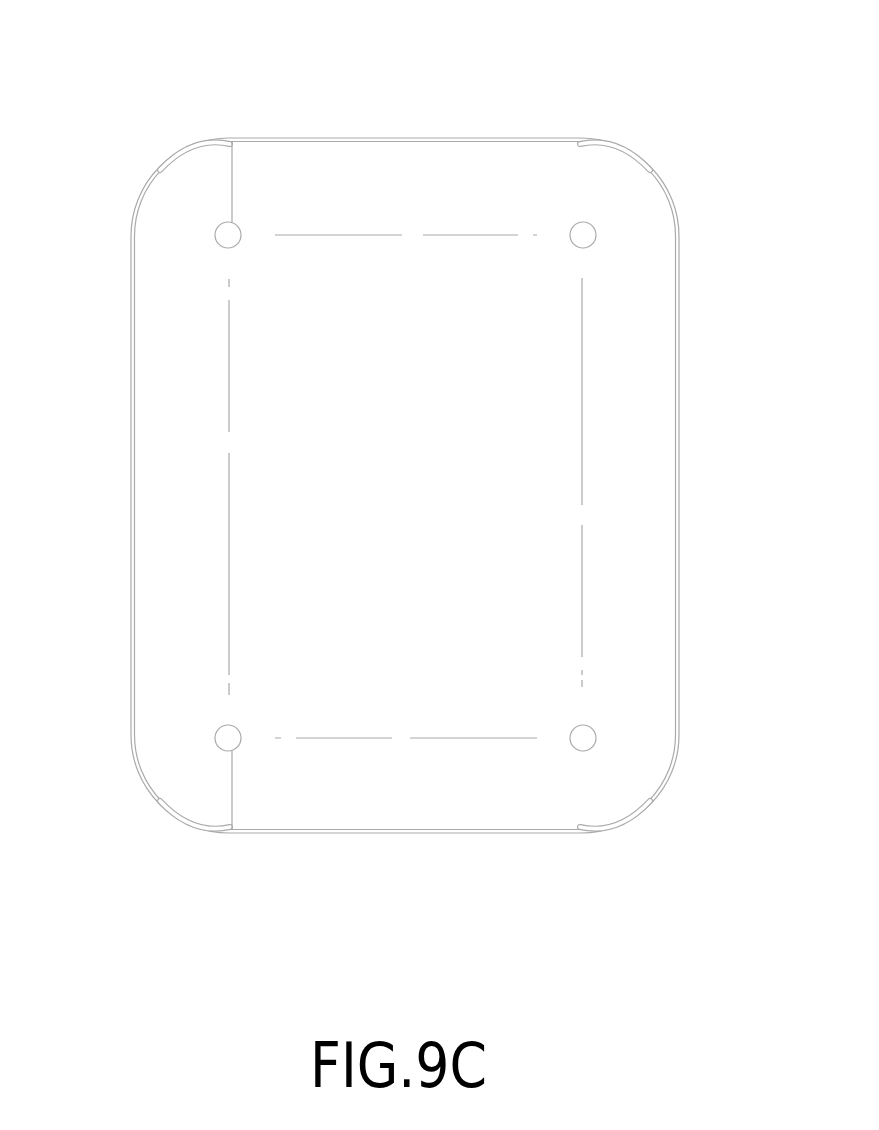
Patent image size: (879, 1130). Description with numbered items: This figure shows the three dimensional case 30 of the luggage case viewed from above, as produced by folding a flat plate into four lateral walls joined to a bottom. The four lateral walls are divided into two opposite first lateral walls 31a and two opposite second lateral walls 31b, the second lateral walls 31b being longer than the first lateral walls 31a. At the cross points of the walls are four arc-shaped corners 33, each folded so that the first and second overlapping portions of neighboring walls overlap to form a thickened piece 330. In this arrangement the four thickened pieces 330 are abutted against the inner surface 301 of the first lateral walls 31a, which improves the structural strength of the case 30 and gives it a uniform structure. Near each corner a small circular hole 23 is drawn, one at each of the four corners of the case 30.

The three dimensional case 30 is at (416, 130).
The inner surface 301 is at (373, 191).
The first lateral walls 31a is at (470, 138).
The second lateral walls 31b is at (131, 490).
The arc-shaped corners 33 is at (170, 155).
The thickened piece 330 is at (236, 188).
The positioning holes 23 is at (226, 235).